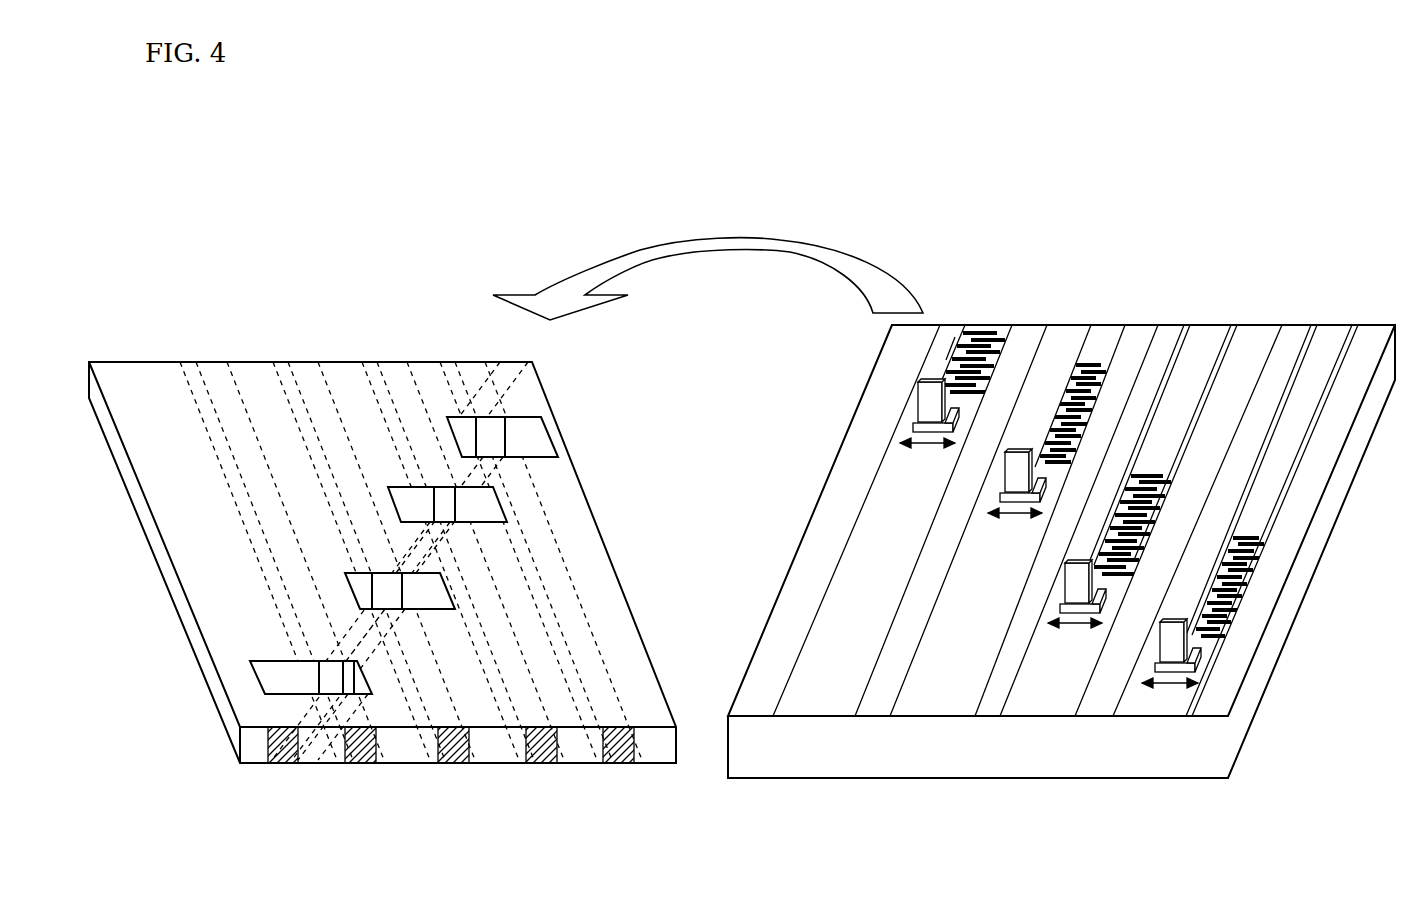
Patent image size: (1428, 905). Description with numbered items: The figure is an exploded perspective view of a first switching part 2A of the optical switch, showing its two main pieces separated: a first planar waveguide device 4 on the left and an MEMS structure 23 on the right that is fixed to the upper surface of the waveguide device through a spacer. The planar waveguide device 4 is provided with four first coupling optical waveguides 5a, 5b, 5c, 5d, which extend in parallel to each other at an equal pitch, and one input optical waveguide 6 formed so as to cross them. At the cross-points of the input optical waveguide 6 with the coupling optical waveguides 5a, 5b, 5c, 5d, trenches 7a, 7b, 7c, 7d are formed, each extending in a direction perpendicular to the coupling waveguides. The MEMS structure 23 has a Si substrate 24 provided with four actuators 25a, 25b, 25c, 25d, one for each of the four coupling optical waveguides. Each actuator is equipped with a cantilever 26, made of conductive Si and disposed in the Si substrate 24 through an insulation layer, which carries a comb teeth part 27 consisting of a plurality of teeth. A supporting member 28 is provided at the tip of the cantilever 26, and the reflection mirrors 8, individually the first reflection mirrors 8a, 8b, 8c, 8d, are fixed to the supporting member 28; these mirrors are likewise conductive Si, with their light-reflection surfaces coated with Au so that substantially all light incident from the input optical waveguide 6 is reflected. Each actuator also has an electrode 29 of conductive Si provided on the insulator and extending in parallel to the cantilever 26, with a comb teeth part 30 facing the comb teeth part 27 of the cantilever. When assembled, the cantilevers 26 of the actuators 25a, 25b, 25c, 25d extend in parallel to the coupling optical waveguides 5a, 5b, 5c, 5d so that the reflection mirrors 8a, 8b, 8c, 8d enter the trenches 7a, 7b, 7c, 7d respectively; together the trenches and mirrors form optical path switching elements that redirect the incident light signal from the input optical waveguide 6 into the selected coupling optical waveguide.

The first planar waveguide device 4 is at (148, 382).
The first coupling optical waveguide 5a is at (358, 750).
The first coupling optical waveguide 5b is at (455, 750).
The first coupling optical waveguide 5c is at (543, 750).
The first coupling optical waveguide 5d is at (620, 750).
The input optical waveguide 6 is at (282, 750).
The trench 7a is at (268, 673).
The trench 7b is at (360, 578).
The trench 7c is at (490, 507).
The trench 7d is at (530, 437).
The first switching part 2A is at (912, 118).
The MEMS structure 23 is at (1352, 305).
The Si substrate 24 is at (1152, 325).
The actuator 25a is at (1172, 692).
The actuator 25b is at (1073, 631).
The actuator 25c is at (1010, 536).
The actuator 25d is at (923, 455).
The cantilever 26 is at (955, 337).
The comb teeth part 27 is at (983, 327).
The supporting member 28 is at (918, 428).
The electrode 29 is at (1013, 338).
The comb teeth part 30 is at (1003, 327).
The reflection mirror 8 is at (976, 560).
The first reflection mirror 8a is at (1170, 637).
The first reflection mirror 8b is at (1076, 578).
The first reflection mirror 8c is at (1012, 470).
The first reflection mirror 8d is at (925, 390).